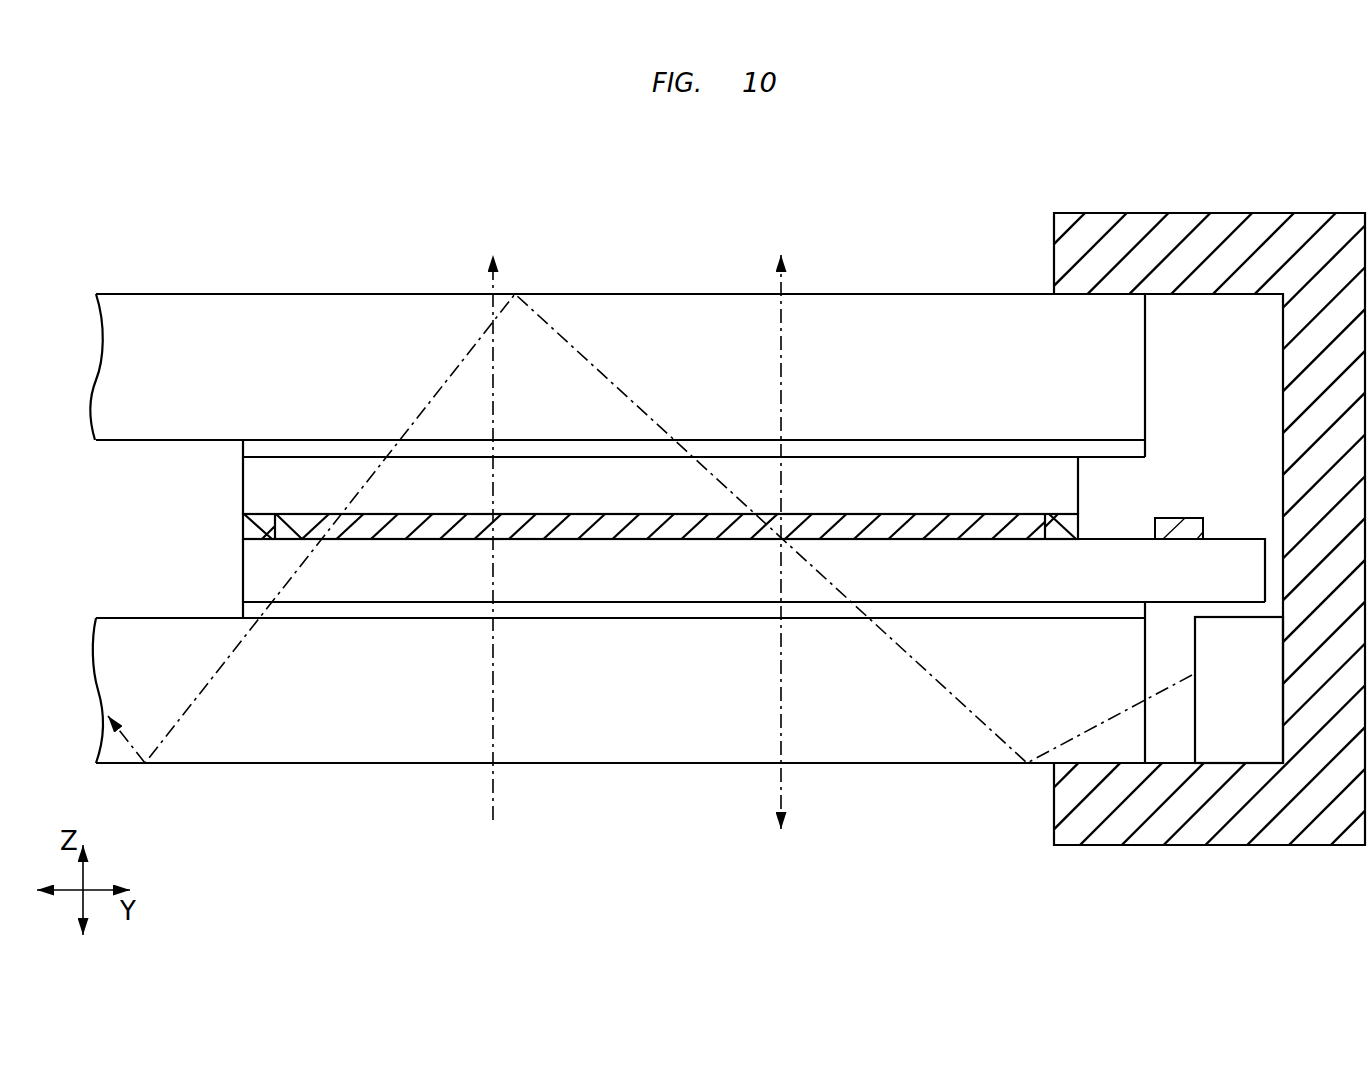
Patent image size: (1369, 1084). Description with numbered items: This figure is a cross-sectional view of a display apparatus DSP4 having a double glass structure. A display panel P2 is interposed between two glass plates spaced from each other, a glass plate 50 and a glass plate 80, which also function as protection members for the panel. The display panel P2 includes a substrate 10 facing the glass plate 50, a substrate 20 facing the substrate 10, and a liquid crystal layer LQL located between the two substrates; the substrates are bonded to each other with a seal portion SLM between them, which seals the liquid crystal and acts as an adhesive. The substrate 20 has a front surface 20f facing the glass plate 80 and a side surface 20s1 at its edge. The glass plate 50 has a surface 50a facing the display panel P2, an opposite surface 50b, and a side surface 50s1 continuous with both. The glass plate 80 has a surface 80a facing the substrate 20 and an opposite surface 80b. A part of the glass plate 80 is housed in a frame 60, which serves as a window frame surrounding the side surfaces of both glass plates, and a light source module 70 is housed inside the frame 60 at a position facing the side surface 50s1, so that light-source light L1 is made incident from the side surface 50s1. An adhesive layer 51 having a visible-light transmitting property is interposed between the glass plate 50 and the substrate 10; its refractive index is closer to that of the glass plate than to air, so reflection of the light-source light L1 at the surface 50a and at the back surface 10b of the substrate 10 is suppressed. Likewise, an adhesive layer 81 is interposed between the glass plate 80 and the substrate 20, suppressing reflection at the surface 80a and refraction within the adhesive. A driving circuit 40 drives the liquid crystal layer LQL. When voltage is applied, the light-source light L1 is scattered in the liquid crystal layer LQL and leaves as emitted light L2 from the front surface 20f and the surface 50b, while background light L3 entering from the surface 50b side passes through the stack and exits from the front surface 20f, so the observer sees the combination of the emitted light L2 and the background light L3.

The display apparatus DSP4 is at (232, 215).
The glass plate 80 is at (873, 310).
The surface 80a is at (448, 446).
The surface 80b is at (262, 293).
The adhesive layer 81 is at (952, 450).
The substrate 20 is at (265, 476).
The front surface 20f is at (535, 456).
The side surface of counter substrate 20s1 is at (1082, 480).
The seal portion SLM is at (245, 527).
The liquid crystal layer LQL is at (445, 540).
The substrate 10 is at (272, 570).
The back surface 10b is at (577, 604).
The display panel P2 is at (162, 457).
The glass plate 50 is at (192, 752).
The surface 50a is at (792, 615).
The surface 50b is at (978, 766).
The side surface 50s1 is at (1148, 732).
The adhesive layer 51 is at (327, 614).
The frame 60 is at (1202, 265).
The light source module 70 is at (1257, 728).
The driving circuit 40 is at (1183, 518).
The light-source light L1 is at (1081, 731).
The emitted light L2 is at (780, 335).
The background light L3 is at (492, 312).